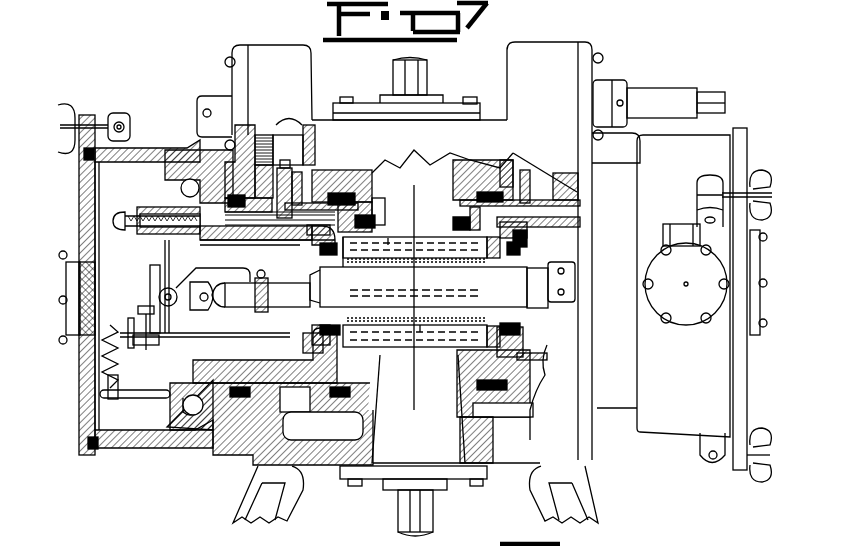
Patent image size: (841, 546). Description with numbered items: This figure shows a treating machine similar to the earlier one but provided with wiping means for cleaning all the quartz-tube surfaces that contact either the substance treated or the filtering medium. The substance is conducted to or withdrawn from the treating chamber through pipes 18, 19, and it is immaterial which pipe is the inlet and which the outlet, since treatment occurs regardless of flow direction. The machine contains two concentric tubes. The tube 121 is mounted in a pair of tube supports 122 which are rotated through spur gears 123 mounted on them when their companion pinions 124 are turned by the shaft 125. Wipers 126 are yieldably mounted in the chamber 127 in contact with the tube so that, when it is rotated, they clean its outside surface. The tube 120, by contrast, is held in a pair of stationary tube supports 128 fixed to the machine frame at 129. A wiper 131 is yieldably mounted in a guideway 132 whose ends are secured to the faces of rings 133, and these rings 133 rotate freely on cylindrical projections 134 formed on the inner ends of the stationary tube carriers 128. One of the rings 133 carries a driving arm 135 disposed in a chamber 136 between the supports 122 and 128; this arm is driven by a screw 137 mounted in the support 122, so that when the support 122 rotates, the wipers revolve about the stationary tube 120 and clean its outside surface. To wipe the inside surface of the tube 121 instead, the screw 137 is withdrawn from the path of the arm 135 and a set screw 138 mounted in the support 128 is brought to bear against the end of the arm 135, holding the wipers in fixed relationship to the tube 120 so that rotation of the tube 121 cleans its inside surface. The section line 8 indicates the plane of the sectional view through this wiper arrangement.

The section line 8 is at (418, 195).
The pipe 18 is at (428, 75).
The pipe 19 is at (434, 515).
The tube 120 is at (373, 314).
The tube 121 is at (388, 238).
The tube supports 122 is at (218, 228).
The spur gears 123 is at (233, 443).
The pinions 124 is at (298, 125).
The shaft 125 is at (705, 90).
The wipers 126 is at (474, 288).
The chamber 127 is at (440, 168).
The stationary tube supports 128 is at (200, 235).
The frame fixing point 129 is at (147, 160).
The wiper 131 is at (366, 265).
The guideways 132 is at (535, 385).
The rings 133 is at (490, 235).
The cylindrical projections 134 is at (285, 348).
The driving arm 135 is at (275, 228).
The chamber 136 is at (240, 228).
The screw 137 is at (300, 168).
The set screw 138 is at (112, 221).